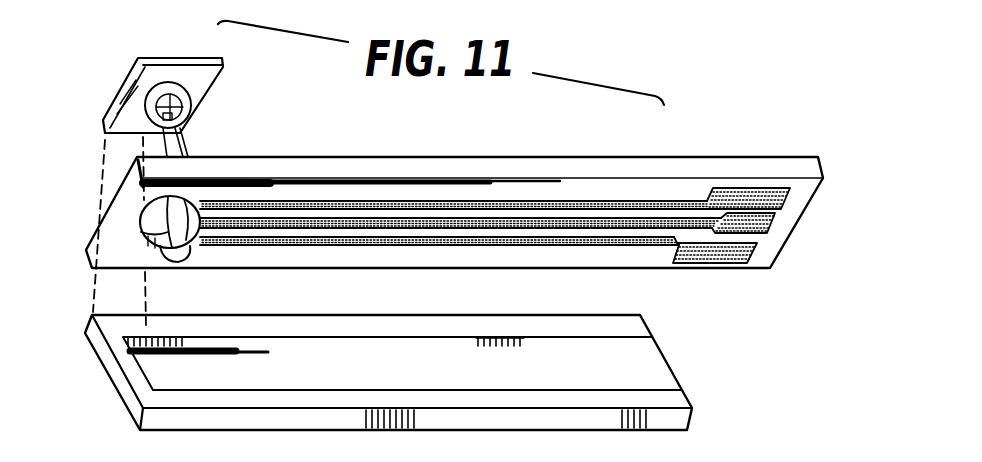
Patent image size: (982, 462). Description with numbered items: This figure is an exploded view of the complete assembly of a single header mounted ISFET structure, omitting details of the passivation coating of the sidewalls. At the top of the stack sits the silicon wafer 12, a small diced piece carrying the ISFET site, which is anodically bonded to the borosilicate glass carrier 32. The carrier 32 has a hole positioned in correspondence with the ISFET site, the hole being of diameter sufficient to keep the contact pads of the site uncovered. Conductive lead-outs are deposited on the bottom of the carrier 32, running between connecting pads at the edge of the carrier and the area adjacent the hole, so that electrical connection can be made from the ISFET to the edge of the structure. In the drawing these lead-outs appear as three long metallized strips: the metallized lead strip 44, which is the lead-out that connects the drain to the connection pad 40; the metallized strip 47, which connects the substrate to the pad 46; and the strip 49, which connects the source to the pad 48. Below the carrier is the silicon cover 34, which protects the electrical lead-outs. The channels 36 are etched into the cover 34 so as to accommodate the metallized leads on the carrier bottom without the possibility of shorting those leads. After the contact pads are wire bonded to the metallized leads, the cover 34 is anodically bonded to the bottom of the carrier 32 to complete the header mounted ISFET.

The silicon wafer 12 is at (198, 84).
The borosilicate glass carrier 32 is at (733, 163).
The silicon cover 34 is at (673, 400).
The channels 36 is at (464, 341).
The connection pad 40 is at (742, 253).
The metallized lead strip 44 is at (618, 246).
The connection pad 46 is at (755, 225).
The metallized strip 47 is at (539, 228).
The connection pad 48 is at (783, 195).
The metallized strip 49 is at (622, 200).